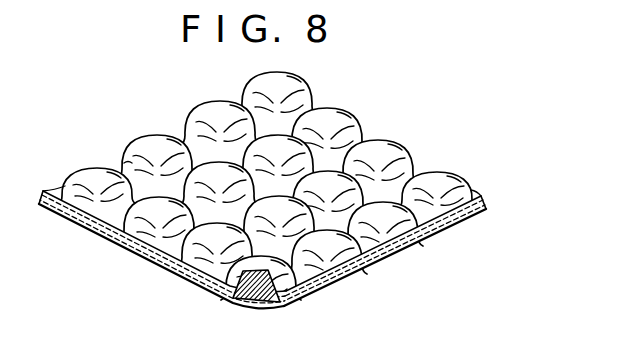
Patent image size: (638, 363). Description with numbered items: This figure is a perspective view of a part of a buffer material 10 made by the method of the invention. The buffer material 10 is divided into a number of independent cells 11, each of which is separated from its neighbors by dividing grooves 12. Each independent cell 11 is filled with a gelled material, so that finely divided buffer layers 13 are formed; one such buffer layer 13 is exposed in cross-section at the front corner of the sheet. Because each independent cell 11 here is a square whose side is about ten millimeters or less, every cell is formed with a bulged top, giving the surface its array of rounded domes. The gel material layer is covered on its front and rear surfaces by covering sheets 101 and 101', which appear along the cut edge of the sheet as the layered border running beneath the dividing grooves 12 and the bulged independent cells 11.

The buffer material 10 is at (478, 195).
The independent cell 11 is at (162, 139).
The dividing groove 12 is at (128, 159).
The buffer layer 13 is at (253, 303).
The covering sheet 101 is at (398, 251).
The covering sheet 101' is at (200, 271).